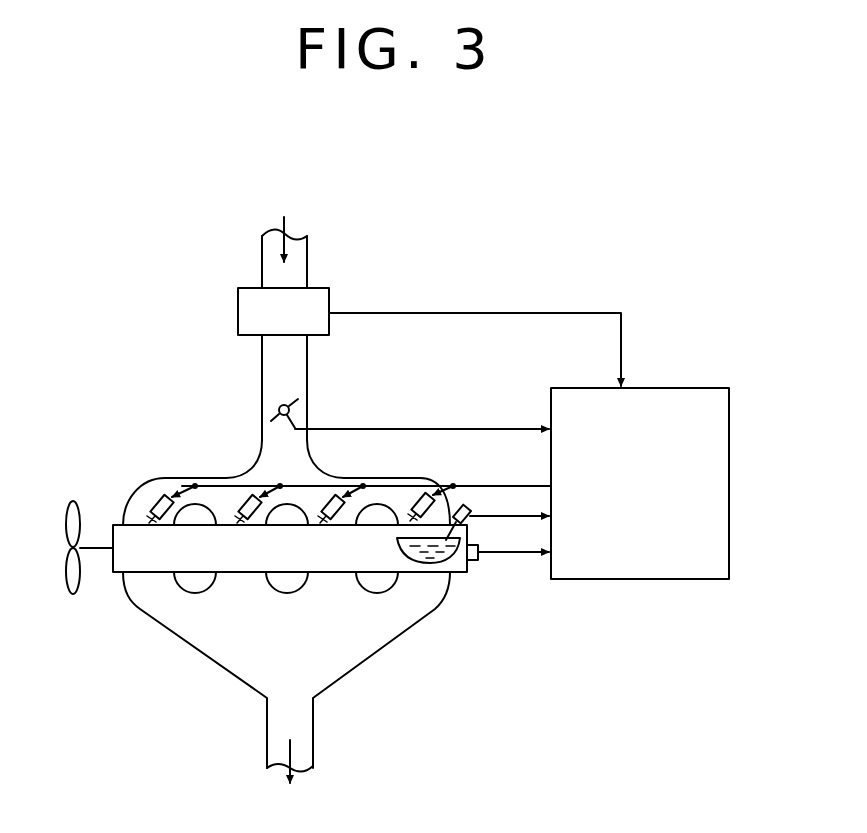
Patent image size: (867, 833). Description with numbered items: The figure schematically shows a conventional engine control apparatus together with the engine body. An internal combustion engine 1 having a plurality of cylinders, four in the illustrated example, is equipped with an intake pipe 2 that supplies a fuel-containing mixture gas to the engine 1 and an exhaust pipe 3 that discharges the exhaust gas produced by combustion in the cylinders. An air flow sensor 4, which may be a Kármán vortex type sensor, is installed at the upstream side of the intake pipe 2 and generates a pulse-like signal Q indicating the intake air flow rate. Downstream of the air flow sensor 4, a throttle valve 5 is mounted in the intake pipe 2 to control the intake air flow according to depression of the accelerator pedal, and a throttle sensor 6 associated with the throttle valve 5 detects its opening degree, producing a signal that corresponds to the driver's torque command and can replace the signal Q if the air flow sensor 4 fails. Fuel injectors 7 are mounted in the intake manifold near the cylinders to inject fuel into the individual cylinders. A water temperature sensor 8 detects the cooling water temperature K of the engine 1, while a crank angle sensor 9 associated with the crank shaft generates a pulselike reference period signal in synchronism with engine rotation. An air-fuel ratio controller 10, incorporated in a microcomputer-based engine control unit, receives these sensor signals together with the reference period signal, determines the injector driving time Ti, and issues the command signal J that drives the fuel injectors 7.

The internal combustion engine 1 is at (150, 572).
The intake pipe 2 is at (307, 360).
The exhaust pipe 3 is at (313, 716).
The air flow sensor 4 is at (317, 288).
The throttle valve 5 is at (300, 407).
The throttle sensor 6 is at (280, 407).
The fuel injectors 7 is at (156, 494).
The water temperature sensor 8 is at (470, 518).
The crank angle sensor 9 is at (478, 566).
The air-fuel ratio controller 10 is at (684, 388).